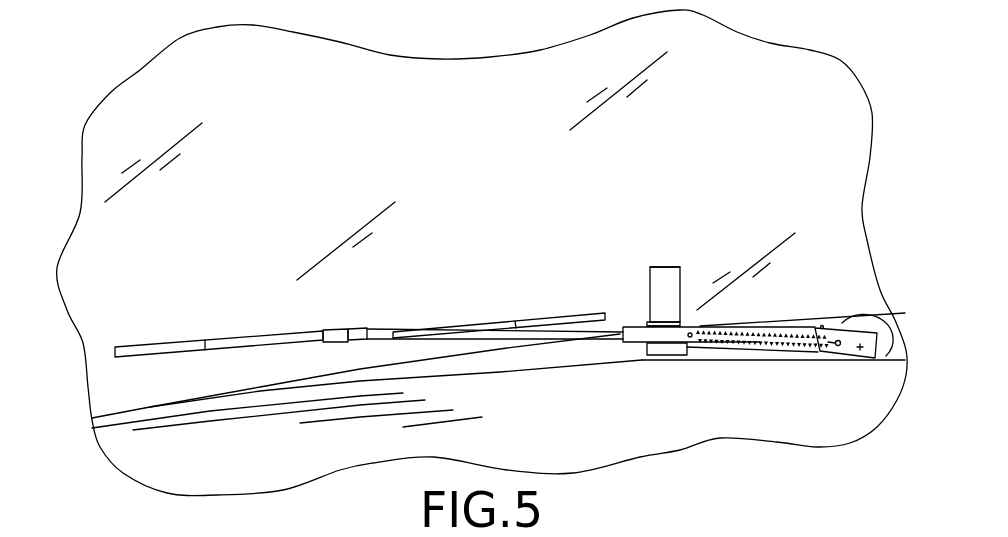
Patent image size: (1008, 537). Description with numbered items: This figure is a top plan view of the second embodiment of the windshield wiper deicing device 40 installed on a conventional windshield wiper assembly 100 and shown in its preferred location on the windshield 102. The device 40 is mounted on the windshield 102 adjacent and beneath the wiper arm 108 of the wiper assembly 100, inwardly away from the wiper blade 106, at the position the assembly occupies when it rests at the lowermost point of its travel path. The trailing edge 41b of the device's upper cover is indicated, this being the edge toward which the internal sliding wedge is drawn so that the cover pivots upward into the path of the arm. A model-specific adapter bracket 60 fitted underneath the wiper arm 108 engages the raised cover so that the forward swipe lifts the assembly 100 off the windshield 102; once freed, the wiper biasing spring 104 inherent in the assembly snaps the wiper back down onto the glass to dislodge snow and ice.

The windshield 102 is at (155, 97).
The windshield wiper assembly 100 is at (200, 342).
The wiper blade 106 is at (537, 315).
The windshield wiper deicing device 40 is at (643, 281).
The trailing edge 41b is at (662, 267).
The model-specific adapter bracket 60 is at (647, 322).
The wiper biasing spring 104 is at (778, 345).
The wiper arm 108 is at (778, 345).